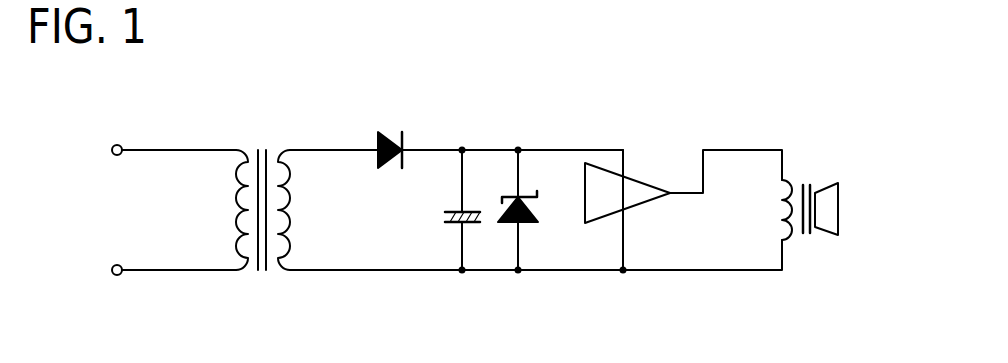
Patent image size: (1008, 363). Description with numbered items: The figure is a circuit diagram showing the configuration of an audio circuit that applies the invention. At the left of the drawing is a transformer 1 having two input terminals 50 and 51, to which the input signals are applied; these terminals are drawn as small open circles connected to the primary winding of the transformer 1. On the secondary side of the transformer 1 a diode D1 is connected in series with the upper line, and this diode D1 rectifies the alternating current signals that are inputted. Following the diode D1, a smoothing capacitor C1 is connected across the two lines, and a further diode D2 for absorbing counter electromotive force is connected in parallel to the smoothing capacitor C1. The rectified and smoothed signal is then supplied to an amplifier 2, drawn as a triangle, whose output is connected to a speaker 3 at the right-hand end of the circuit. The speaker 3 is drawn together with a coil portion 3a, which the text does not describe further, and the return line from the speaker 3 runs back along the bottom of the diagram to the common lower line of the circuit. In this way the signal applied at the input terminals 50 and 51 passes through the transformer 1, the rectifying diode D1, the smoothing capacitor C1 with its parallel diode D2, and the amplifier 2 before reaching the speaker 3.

The input terminal 50 is at (113, 146).
The input terminal 51 is at (115, 277).
The transformer 1 is at (262, 143).
The diode D1 is at (390, 132).
The smoothing capacitor C1 is at (441, 213).
The diode D2 is at (527, 196).
The amplifier 2 is at (638, 193).
The coil of sounding body 3a is at (788, 180).
The speaker 3 is at (815, 165).